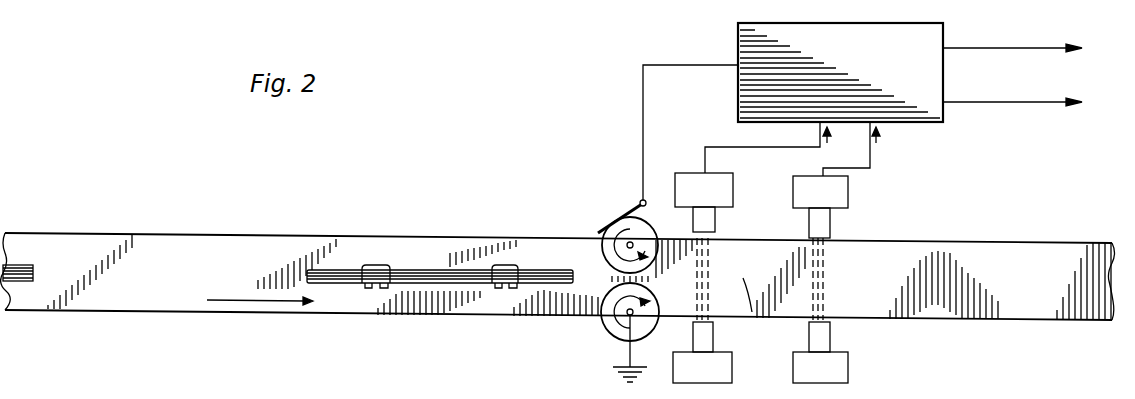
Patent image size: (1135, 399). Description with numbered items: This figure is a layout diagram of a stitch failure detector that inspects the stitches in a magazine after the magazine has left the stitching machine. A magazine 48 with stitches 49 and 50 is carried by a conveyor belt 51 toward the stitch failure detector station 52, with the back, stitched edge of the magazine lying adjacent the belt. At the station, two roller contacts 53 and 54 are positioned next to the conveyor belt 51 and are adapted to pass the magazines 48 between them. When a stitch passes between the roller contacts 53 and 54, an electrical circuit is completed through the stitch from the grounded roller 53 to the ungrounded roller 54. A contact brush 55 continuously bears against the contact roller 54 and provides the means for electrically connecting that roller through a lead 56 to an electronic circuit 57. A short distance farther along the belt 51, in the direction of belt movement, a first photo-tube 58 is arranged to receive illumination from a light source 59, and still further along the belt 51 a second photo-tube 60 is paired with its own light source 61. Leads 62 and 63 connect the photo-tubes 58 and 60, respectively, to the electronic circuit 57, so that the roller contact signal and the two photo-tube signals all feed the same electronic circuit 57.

The magazine 48 is at (25, 265).
The stitch 49 is at (495, 288).
The stitch 50 is at (365, 288).
The conveyor belt 51 is at (278, 233).
The stitch failure detector station 52 is at (630, 183).
The grounded roller contact 53 is at (607, 327).
The ungrounded roller contact 54 is at (602, 248).
The contact brush 55 is at (600, 232).
The lead 56 is at (643, 86).
The electronic circuit 57 is at (738, 36).
The first photo-tube 58 is at (716, 222).
The light source 59 is at (714, 340).
The second photo-tube 60 is at (832, 228).
The light source 61 is at (836, 344).
The lead 62 is at (718, 134).
The lead 63 is at (872, 167).